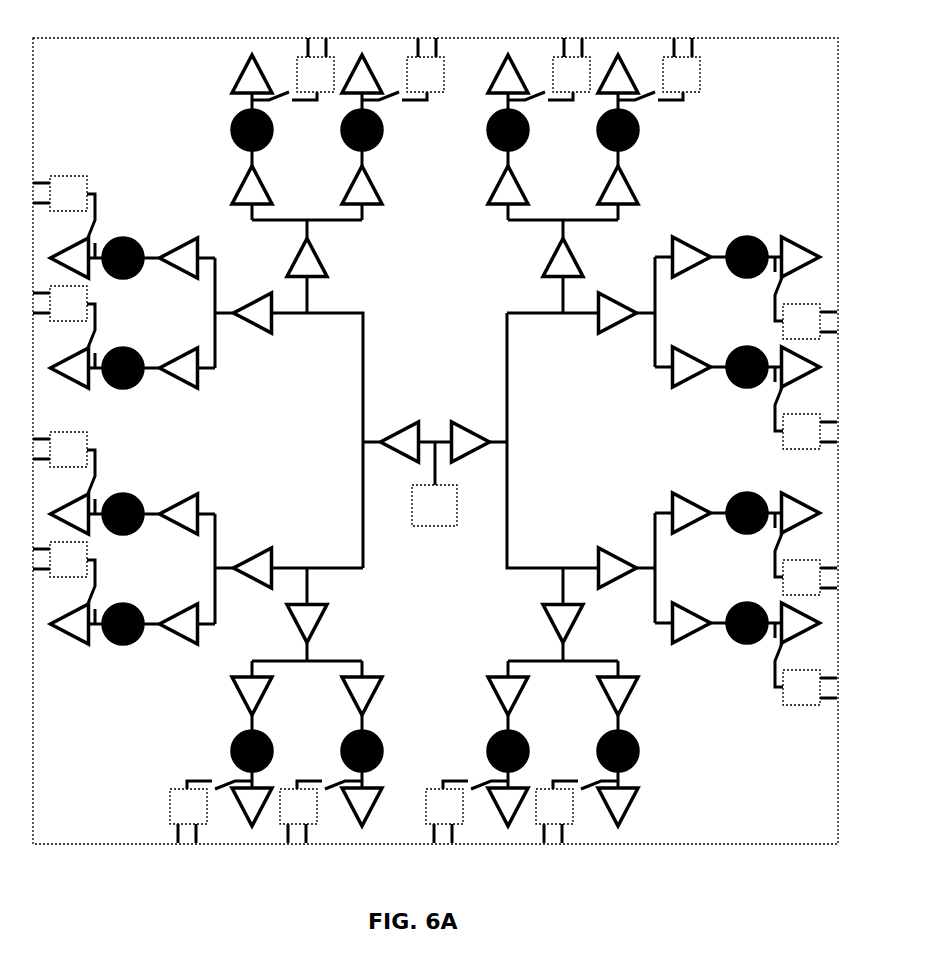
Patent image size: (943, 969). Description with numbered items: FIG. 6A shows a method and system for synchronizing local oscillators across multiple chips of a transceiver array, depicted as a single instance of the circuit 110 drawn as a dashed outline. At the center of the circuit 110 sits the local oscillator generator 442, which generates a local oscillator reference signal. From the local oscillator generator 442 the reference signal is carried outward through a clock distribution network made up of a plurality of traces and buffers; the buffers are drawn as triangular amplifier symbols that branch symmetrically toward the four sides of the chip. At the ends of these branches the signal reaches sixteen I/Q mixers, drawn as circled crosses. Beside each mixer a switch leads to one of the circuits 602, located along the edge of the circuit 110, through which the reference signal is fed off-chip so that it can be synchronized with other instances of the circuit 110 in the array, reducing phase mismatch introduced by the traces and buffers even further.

The circuit 110 is at (128, 38).
The local oscillator generator 442 is at (434, 484).
The circuit 602 is at (435, 440).